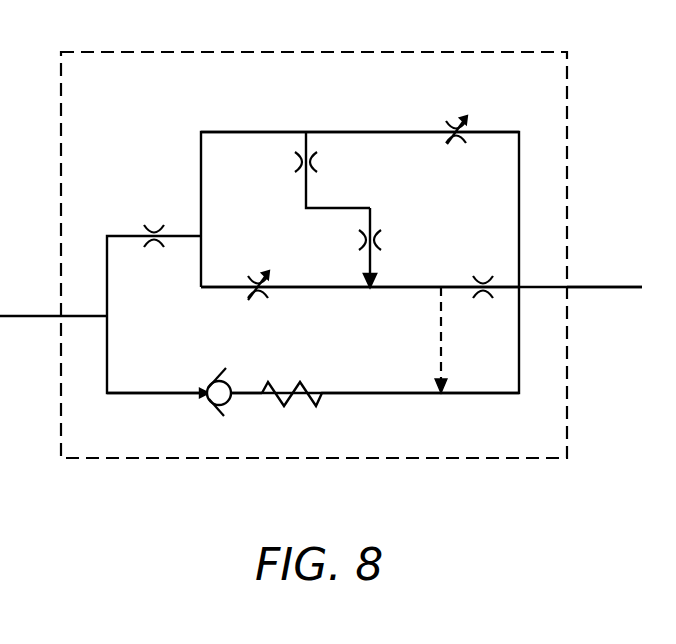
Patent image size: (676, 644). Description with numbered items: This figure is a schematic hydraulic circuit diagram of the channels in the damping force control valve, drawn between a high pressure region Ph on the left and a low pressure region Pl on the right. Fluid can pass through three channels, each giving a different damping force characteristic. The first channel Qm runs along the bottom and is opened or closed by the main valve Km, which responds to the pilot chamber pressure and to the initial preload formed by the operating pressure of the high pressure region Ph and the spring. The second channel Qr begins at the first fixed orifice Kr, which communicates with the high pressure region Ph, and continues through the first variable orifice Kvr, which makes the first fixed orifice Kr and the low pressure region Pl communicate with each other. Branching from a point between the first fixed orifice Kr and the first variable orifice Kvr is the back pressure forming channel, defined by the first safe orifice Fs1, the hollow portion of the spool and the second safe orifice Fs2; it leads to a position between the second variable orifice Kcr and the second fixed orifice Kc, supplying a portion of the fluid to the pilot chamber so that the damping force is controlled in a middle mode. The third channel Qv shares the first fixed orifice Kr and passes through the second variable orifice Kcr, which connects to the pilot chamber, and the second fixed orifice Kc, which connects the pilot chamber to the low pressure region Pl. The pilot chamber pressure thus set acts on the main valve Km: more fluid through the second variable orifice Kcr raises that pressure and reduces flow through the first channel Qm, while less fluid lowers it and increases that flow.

The high pressure region Ph is at (53, 303).
The low pressure region Pl is at (604, 274).
The second channel Qr is at (360, 118).
The third channel Qv is at (351, 299).
The first channel Qm is at (154, 381).
The first fixed orifice Kr is at (153, 224).
The first variable orifice Kvr is at (455, 115).
The second variable orifice Kcr is at (257, 272).
The second fixed orifice Kc is at (480, 275).
The first safe orifice Fs1 is at (332, 170).
The second safe orifice Fs2 is at (390, 247).
The main valve Km is at (359, 408).